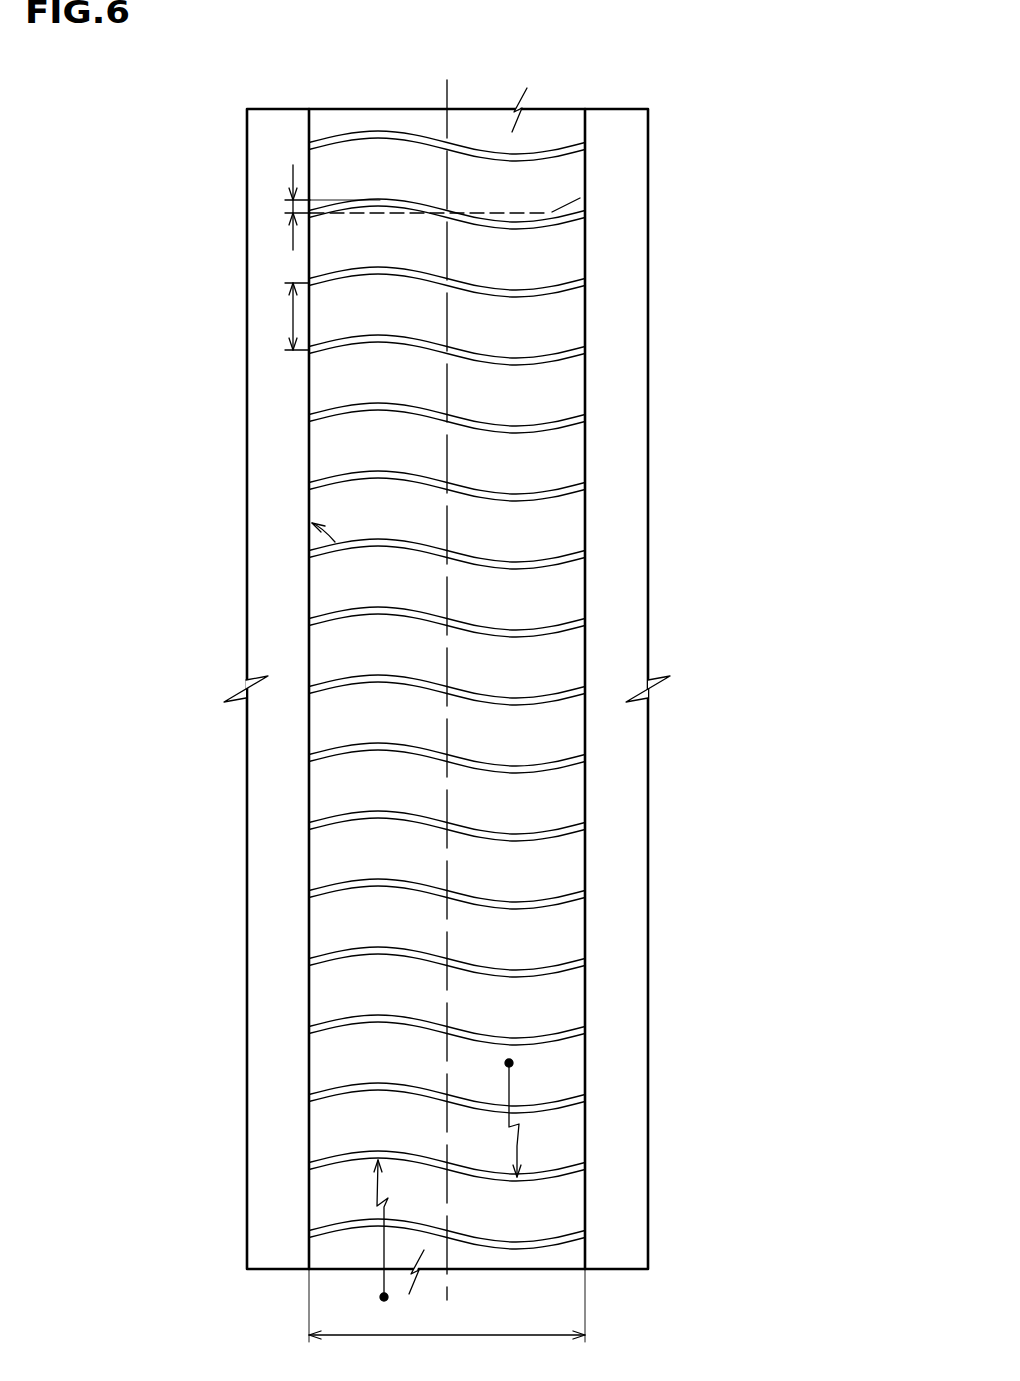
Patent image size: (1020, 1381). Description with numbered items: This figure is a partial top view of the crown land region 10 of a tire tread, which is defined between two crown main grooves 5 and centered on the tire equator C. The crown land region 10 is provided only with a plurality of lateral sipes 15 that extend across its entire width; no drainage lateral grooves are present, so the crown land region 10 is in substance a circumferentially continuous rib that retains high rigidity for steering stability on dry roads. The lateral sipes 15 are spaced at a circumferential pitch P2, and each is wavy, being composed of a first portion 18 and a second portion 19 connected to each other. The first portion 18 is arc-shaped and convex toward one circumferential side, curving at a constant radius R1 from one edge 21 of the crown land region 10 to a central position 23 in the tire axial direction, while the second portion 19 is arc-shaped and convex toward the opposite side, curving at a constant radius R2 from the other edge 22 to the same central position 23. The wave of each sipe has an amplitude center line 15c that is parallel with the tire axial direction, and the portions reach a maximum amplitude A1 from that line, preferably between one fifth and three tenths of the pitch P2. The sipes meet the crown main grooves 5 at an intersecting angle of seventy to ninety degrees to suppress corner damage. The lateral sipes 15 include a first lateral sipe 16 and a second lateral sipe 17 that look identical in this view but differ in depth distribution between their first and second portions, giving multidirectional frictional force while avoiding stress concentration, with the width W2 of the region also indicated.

The crown main groove 5 is at (273, 157).
The crown land region 10 is at (463, 195).
The lateral sipe 15 is at (467, 222).
The amplitude center line 15c is at (580, 198).
The first lateral sipe 16 is at (462, 488).
The second lateral sipe 17 is at (463, 558).
The first portion 18 is at (382, 200).
The second portion 19 is at (538, 226).
The edge of the crown land region 21 is at (308, 1000).
The other edge of the crown land region 22 is at (585, 1068).
The central position 23 is at (457, 1192).
The tire equator C is at (448, 674).
The maximum amplitude A1 is at (290, 200).
The pitch of the lateral sipes P2 is at (292, 313).
The radius of curvature of the first portion R1 is at (378, 1190).
The radius of curvature of the second portion R2 is at (520, 1143).
The width W2 is at (447, 1321).